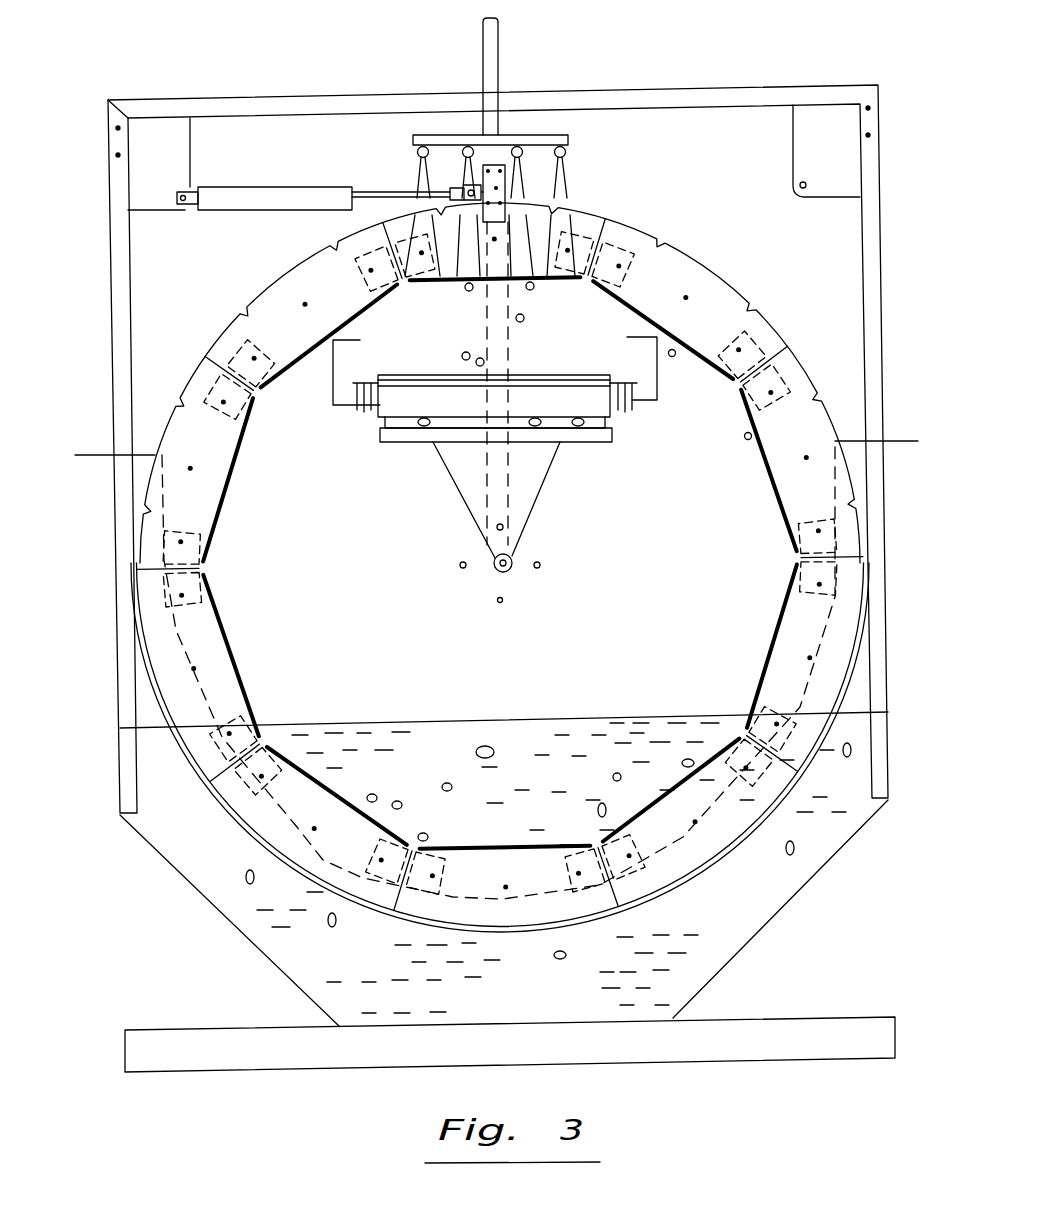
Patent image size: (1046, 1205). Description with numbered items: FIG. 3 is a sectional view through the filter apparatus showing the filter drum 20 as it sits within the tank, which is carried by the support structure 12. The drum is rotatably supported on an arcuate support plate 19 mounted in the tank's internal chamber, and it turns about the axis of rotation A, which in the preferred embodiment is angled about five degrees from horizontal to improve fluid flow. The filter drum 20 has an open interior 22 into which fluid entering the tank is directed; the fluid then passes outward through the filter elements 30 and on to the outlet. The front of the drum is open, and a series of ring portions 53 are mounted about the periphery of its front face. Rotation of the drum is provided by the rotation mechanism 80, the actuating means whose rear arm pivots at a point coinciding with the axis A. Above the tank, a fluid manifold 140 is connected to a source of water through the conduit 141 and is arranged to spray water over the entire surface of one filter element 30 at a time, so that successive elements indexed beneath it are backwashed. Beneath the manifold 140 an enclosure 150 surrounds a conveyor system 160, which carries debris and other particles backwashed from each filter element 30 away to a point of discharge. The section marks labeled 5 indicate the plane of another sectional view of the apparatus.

The support structure 12 is at (840, 1017).
The section line 5 is at (499, 449).
The support plate 19 is at (700, 862).
The filter drum 20 is at (692, 248).
The open interior 22 is at (318, 522).
The filter elements 30 is at (447, 284).
The ring portions 53 is at (735, 300).
The rotation mechanism 80 is at (455, 176).
The fluid manifold 140 is at (536, 132).
The conduit 141 is at (488, 60).
The enclosure 150 is at (338, 375).
The conveyor system 160 is at (580, 372).
The axis of rotation A is at (510, 560).